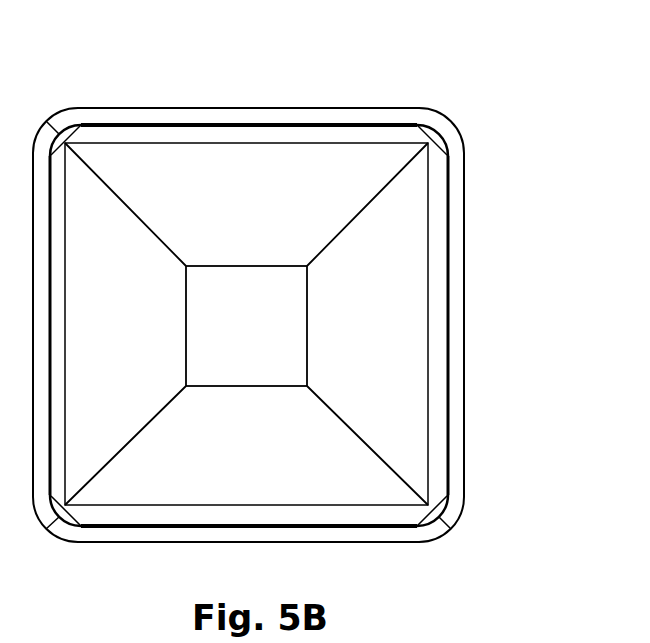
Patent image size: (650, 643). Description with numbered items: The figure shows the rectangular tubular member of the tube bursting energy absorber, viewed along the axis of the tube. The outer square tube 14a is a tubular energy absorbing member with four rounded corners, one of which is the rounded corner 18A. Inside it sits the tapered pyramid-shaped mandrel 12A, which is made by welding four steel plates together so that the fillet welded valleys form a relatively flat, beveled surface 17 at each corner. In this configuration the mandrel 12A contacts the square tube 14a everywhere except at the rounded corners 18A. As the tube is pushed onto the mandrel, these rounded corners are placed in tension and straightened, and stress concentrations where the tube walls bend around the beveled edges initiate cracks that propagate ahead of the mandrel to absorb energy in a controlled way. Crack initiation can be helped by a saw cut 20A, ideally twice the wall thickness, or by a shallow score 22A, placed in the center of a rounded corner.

The mandrel 12A is at (228, 172).
The square tube 14a is at (458, 332).
The flat beveled surface 17 is at (431, 142).
The rounded corner 18A is at (445, 522).
The saw cut 20A is at (58, 128).
The score 22A is at (53, 523).